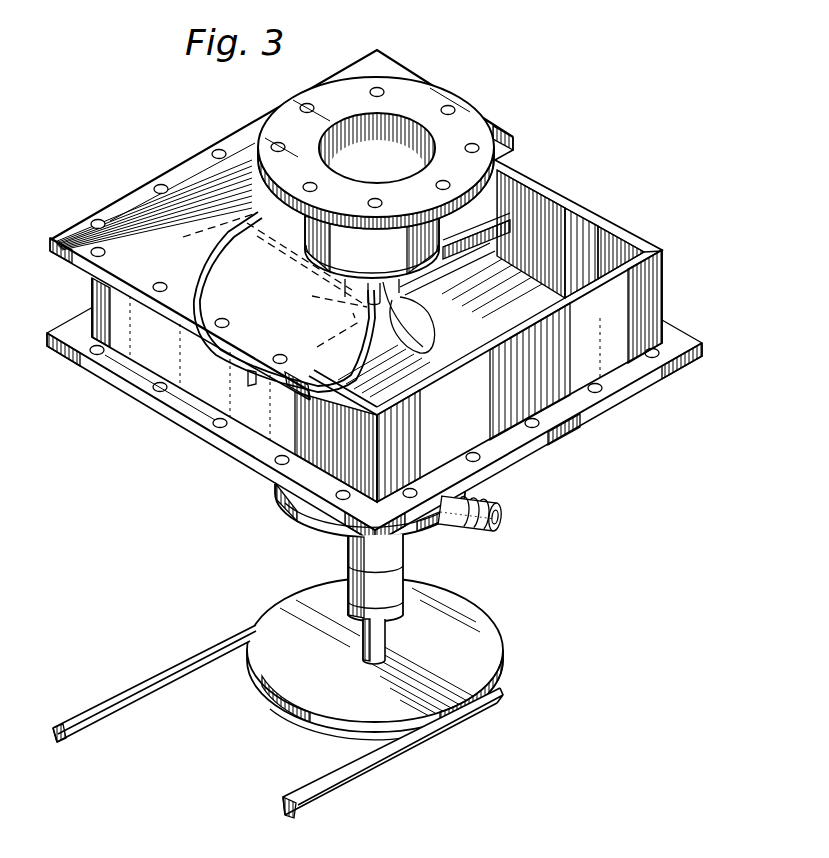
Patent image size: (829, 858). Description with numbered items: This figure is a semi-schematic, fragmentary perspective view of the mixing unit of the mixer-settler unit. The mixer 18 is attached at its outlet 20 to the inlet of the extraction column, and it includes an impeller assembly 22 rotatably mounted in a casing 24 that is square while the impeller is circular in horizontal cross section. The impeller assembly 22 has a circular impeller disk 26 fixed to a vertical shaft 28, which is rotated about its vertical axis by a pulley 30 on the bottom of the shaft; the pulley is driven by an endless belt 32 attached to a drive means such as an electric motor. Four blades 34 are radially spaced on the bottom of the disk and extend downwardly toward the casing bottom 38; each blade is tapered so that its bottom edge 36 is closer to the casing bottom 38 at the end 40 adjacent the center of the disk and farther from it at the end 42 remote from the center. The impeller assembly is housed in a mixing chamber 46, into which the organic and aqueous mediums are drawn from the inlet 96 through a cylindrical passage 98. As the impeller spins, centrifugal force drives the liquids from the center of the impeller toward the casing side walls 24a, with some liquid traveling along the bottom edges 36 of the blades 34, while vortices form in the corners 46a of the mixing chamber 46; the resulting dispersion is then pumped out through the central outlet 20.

The mixer unit 18 is at (188, 143).
The outlet 20 is at (398, 138).
The impeller assembly 22 is at (492, 226).
The casing 24 is at (145, 345).
The casing side walls 24a is at (276, 414).
The impeller disk 26 is at (488, 217).
The vertical shaft 28 is at (418, 309).
The pulley 30 is at (450, 630).
The endless belt 32 is at (416, 742).
The blades 34 is at (278, 355).
The bottom edge 36 is at (302, 267).
The casing bottom 38 is at (465, 351).
The inner end of blade 40 is at (312, 296).
The outer end of blade 42 is at (237, 228).
The mixing chamber 46 is at (590, 262).
The corners of the mixing chamber 46a is at (106, 302).
The inlet 96 is at (491, 499).
The cylindrical passage 98 is at (427, 362).